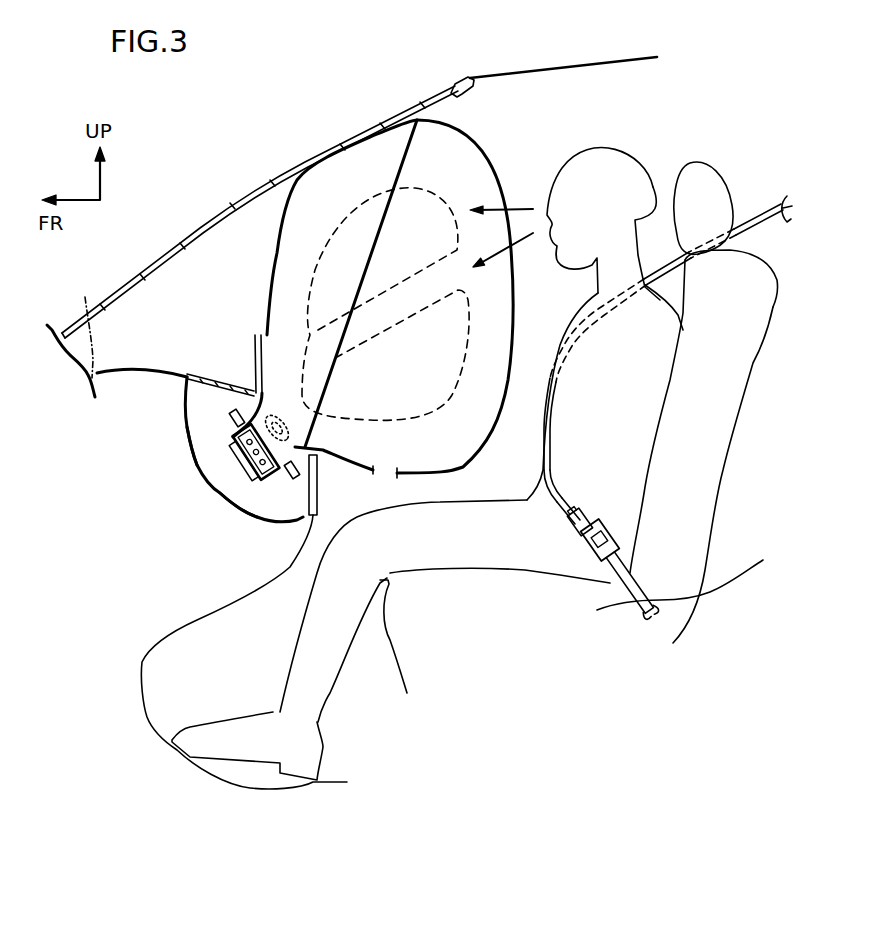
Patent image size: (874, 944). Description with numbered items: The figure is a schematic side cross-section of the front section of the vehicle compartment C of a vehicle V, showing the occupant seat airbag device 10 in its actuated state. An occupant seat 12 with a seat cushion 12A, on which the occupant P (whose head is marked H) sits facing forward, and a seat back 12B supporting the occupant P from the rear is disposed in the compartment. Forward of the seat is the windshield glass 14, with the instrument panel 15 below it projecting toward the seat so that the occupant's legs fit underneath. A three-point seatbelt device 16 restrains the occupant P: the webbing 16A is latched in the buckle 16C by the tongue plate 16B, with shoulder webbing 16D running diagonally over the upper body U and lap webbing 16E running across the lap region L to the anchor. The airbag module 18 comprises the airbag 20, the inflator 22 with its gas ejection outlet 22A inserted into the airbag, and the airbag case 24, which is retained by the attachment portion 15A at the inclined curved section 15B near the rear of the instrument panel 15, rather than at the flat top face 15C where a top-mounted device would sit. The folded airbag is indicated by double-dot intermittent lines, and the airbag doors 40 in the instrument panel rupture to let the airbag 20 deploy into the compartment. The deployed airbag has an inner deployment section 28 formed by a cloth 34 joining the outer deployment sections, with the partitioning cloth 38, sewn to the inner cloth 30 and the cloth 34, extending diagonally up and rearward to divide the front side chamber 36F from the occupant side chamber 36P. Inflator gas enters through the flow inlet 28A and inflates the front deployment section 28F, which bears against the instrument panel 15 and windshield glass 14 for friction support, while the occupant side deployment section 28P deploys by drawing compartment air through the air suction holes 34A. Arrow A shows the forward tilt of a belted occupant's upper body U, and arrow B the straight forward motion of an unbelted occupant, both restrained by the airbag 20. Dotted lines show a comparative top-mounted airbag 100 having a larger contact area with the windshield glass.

The occupant seat airbag device 10 is at (540, 107).
The occupant seat 12 is at (792, 487).
The seat cushion 12A is at (591, 574).
The seat back 12B is at (687, 500).
The windshield glass 14 is at (213, 217).
The instrument panel 15 is at (170, 373).
The attachment portion 15A is at (187, 433).
The curved section 15B is at (247, 390).
The top face 15C is at (138, 372).
The seatbelt device 16 is at (750, 208).
The webbing 16A is at (597, 405).
The tongue plate 16B is at (570, 527).
The buckle 16C is at (584, 550).
The shoulder webbing 16D is at (547, 467).
The lap webbing 16E is at (557, 500).
The airbag module 18 is at (223, 467).
The airbag 20 is at (263, 410).
The inflator 22 is at (250, 470).
The gas ejection outlet 22A is at (255, 477).
The airbag case 24 is at (221, 450).
The inner deployment section 28 is at (297, 90).
The flow inlet 28A is at (252, 318).
The front deployment section 28F is at (300, 223).
The occupant side deployment section 28P is at (403, 255).
The inner cloth 30 is at (417, 40).
The cloth 34 is at (514, 270).
The air suction holes 34A is at (387, 477).
The front side chamber 36F is at (368, 173).
The occupant side chamber 36P is at (430, 130).
The partitioning cloth 38 is at (410, 163).
The airbag doors 40 is at (252, 333).
The airbag 100 is at (85, 297).
The head H is at (620, 167).
The occupant P is at (660, 168).
The upper body U is at (587, 380).
The lap region L is at (617, 537).
The vehicle V is at (528, 66).
The vehicle compartment C is at (611, 108).
The arrow A is at (503, 261).
The arrow B is at (501, 197).